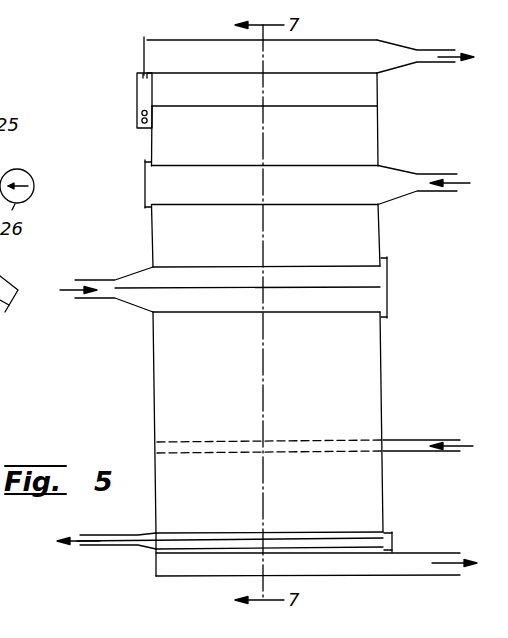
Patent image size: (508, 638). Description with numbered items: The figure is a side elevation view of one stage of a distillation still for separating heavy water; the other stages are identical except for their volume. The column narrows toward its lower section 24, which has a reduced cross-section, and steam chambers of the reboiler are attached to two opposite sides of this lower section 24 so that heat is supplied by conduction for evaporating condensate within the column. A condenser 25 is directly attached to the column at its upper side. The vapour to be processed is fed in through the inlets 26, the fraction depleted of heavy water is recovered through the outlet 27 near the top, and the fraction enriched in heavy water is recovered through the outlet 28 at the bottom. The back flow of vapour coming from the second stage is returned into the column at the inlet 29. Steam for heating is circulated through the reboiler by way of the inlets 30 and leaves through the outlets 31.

The lower section of the column 24 is at (157, 403).
The condenser 25 is at (141, 92).
The inlets 26 is at (146, 188).
The outlet 27 is at (144, 58).
The outlet 28 is at (155, 566).
The inlet 29 is at (404, 441).
The inlets 30 is at (134, 304).
The outlets 31 is at (108, 527).